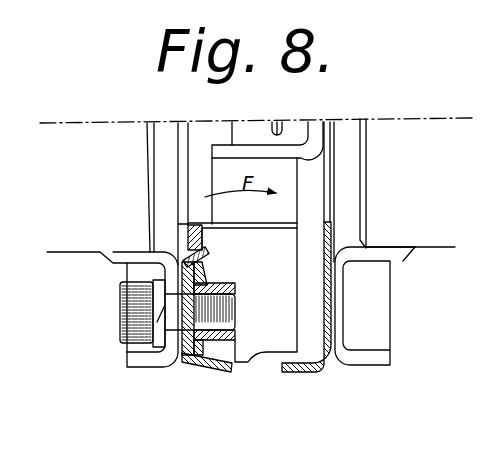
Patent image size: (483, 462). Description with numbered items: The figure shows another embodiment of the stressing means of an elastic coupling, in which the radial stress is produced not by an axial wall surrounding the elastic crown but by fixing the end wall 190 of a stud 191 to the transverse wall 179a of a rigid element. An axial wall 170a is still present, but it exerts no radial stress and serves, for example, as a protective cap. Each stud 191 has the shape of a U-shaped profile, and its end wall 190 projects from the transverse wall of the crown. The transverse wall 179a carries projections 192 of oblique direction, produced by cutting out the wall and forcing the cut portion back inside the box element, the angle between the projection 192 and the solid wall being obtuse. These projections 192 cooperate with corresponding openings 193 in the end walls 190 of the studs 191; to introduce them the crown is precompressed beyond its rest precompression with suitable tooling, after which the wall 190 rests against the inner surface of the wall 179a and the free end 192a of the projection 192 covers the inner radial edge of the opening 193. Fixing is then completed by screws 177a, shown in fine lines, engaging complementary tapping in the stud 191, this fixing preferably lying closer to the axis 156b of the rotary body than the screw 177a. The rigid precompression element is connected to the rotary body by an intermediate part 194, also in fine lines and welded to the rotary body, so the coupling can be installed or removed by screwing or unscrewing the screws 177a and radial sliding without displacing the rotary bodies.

The axis of the rotary body 156b is at (425, 118).
The projection 192 is at (180, 252).
The free end of the projection 192a is at (206, 255).
The end wall of the stud 190 is at (213, 224).
The stud 191 is at (216, 267).
The opening 193 is at (201, 267).
The transverse wall of the rigid element 179a is at (184, 358).
The axial wall 170a is at (216, 378).
The screw 177a is at (206, 318).
The intermediate part 194 is at (140, 358).